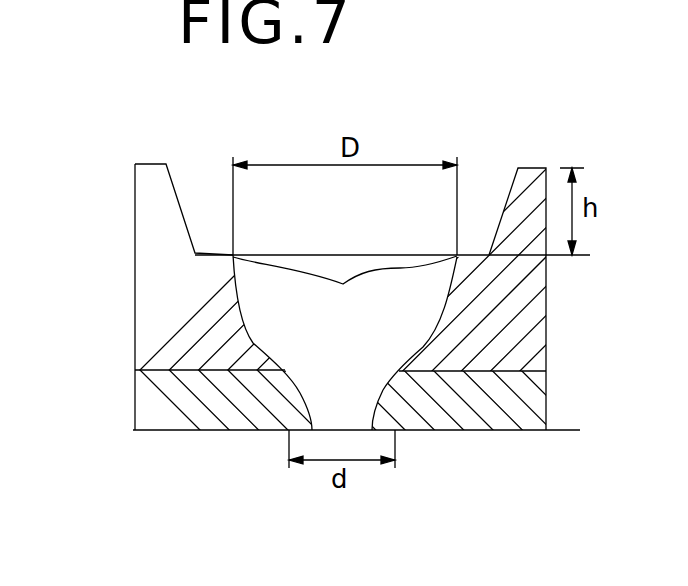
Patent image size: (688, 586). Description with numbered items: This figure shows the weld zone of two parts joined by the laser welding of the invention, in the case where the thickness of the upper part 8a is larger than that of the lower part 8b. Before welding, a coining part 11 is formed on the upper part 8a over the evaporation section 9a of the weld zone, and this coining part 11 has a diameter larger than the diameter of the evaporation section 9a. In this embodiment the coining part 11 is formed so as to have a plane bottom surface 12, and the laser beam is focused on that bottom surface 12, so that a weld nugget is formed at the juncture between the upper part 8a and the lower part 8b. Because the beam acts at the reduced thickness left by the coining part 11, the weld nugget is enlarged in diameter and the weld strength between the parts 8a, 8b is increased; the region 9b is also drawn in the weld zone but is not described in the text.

The upper part 8a is at (138, 278).
The lower part 8b is at (138, 388).
The evaporation section 9a is at (265, 337).
The wide portion of die orifice 9b is at (347, 268).
The coining part 11 is at (489, 198).
The bottom surface 12 is at (473, 257).